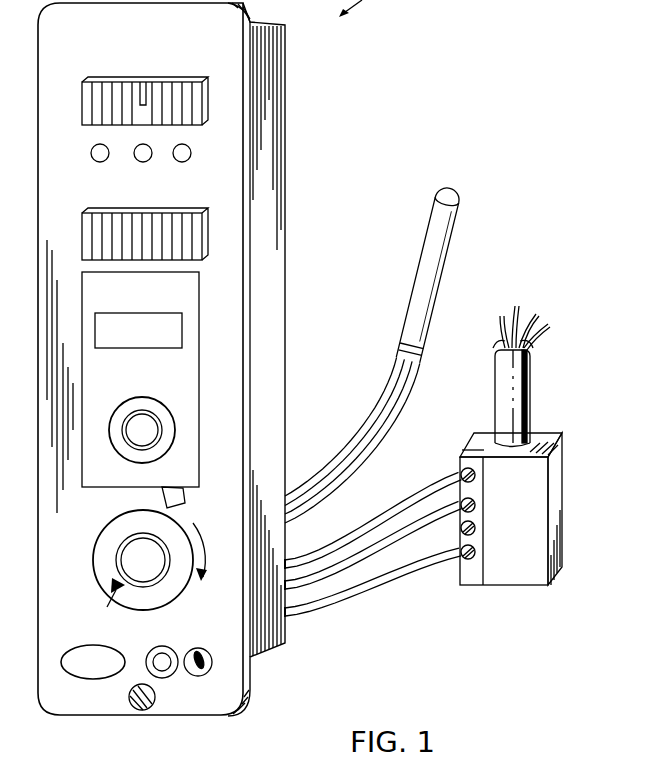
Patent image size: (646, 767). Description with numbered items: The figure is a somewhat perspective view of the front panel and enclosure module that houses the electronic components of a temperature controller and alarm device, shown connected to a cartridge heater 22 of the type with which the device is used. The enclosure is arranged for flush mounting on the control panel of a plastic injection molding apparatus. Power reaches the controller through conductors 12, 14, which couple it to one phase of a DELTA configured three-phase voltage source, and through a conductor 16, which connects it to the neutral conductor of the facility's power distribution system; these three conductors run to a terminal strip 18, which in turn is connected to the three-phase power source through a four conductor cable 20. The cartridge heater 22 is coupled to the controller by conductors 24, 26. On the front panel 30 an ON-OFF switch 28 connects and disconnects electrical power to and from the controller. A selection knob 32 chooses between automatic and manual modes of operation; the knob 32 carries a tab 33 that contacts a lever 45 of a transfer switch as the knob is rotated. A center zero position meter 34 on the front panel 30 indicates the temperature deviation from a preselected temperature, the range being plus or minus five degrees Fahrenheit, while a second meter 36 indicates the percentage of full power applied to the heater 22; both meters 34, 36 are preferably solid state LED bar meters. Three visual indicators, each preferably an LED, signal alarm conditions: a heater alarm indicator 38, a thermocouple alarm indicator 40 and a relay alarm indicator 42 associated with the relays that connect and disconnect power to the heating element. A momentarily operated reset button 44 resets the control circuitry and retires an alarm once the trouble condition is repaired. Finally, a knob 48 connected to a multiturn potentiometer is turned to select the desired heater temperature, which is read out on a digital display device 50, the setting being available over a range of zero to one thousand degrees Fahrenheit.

The conductor 12 is at (360, 530).
The conductor 14 is at (407, 534).
The conductor 16 is at (410, 574).
The terminal strip 18 is at (455, 465).
The four conductor cable 20 is at (530, 341).
The cartridge heater 22 is at (437, 291).
The conductor 24 is at (349, 443).
The conductor 26 is at (367, 455).
The ON-OFF switch 28 is at (205, 674).
The front panel 30 is at (92, 704).
The selection knob 32 is at (95, 554).
The tab 33 is at (90, 584).
The center zero position meter 34 is at (82, 90).
The second meter 36 is at (82, 247).
The heater alarm indicator 38 is at (91, 152).
The thermocouple alarm indicator 40 is at (134, 152).
The relay alarm indicator 42 is at (190, 150).
The reset button 44 is at (168, 676).
The lever 45 is at (185, 500).
The knob 48 is at (125, 403).
The digital display device 50 is at (182, 330).